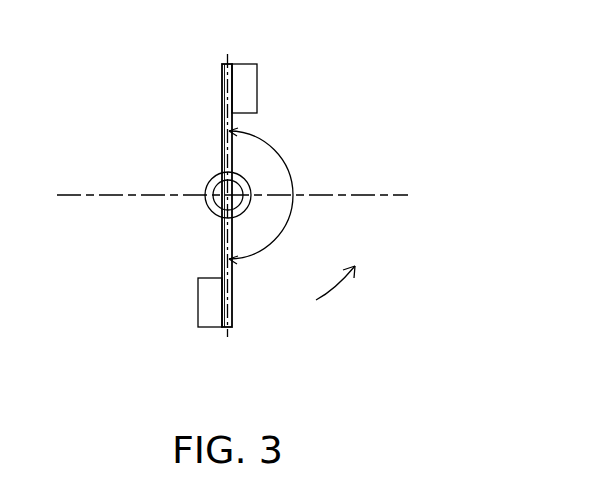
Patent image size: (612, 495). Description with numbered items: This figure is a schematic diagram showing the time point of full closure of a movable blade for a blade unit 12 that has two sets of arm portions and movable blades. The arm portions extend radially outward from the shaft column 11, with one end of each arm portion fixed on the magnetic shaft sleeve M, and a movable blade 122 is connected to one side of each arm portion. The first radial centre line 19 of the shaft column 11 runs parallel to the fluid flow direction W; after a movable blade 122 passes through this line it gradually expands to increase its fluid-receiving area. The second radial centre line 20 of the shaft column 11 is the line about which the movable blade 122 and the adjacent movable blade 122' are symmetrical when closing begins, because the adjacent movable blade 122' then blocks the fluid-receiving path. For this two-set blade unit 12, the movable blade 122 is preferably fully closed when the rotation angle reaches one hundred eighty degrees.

The blade unit 12 is at (185, 89).
The shaft column 11 is at (218, 201).
The first radial centre line 19 is at (222, 248).
The second radial centre line 20 is at (403, 195).
The movable blade 122 is at (290, 88).
The adjacent movable blade 122' is at (164, 304).
The magnetic shaft sleeve M is at (204, 192).
The fluid flow direction W is at (228, 331).